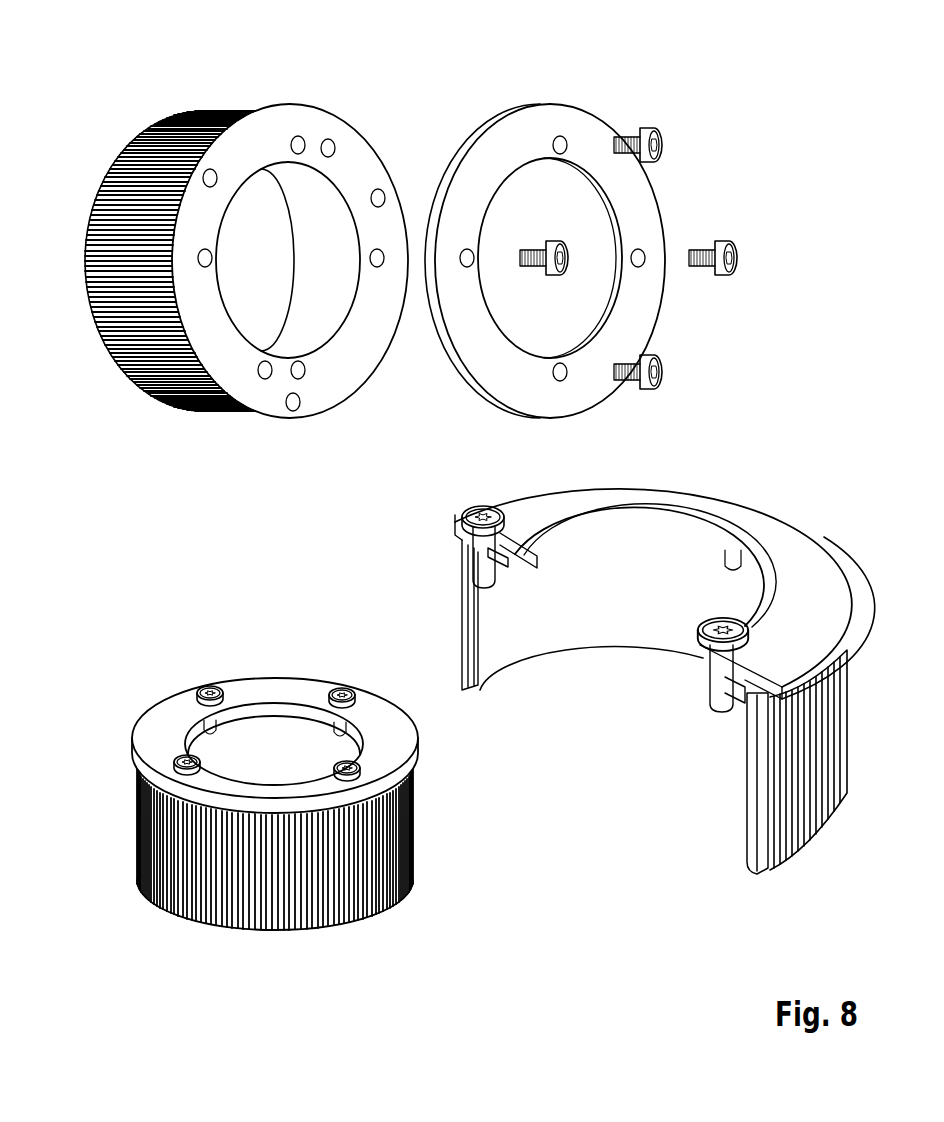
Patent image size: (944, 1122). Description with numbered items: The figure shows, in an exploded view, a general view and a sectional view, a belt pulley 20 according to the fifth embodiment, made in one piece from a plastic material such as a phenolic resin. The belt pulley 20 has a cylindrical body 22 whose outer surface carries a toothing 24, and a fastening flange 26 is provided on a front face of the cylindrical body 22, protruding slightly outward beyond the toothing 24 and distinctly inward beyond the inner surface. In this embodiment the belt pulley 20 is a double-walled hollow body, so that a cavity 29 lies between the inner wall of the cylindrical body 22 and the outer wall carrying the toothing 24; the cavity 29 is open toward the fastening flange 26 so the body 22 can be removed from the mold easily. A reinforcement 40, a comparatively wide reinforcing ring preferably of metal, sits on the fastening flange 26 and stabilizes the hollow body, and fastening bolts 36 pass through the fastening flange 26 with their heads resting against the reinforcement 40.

The belt pulley 20 is at (282, 75).
The cylindrical body 22 is at (748, 752).
The toothing 24 is at (105, 177).
The fastening flange 26 is at (347, 152).
The cavity 29 is at (758, 833).
The fastening bolts 36 is at (727, 497).
The reinforcement 40 is at (817, 528).